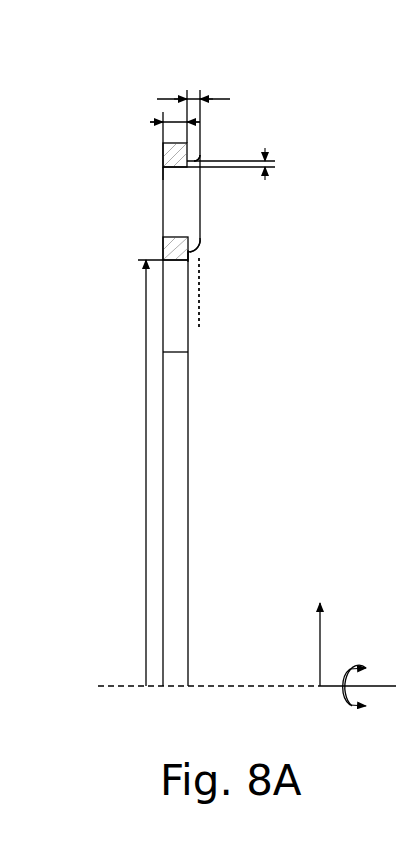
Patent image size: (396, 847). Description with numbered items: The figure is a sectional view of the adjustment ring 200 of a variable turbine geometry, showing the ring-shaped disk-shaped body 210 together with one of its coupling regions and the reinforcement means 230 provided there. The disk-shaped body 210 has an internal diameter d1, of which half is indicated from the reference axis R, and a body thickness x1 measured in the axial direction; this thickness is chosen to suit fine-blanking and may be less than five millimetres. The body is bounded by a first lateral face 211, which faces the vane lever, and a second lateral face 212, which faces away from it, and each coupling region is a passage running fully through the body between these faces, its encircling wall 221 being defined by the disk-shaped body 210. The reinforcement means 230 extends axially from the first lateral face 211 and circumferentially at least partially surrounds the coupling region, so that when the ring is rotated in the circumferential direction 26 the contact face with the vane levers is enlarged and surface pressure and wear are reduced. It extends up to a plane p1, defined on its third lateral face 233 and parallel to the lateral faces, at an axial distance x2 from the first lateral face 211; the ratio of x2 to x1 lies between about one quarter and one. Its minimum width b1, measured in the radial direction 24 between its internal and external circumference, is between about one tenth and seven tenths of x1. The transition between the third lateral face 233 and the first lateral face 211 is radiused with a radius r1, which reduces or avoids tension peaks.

The adjustment ring 200 is at (132, 98).
The disk-shaped body 210 is at (161, 153).
The encircling wall 221 is at (162, 174).
The second lateral face 212 is at (158, 248).
The third lateral face 233 is at (203, 243).
The first lateral face 211 is at (191, 252).
The reinforcement means 230 is at (198, 258).
The body thickness x1 is at (172, 114).
The axial distance x2 is at (190, 100).
The radius r1 is at (200, 148).
The minimum width b1 is at (278, 160).
The plane p1 is at (199, 330).
The internal diameter d1 is at (138, 448).
The radial axis R is at (118, 687).
The radial direction 24 is at (358, 643).
The circumferential direction 26 is at (356, 703).